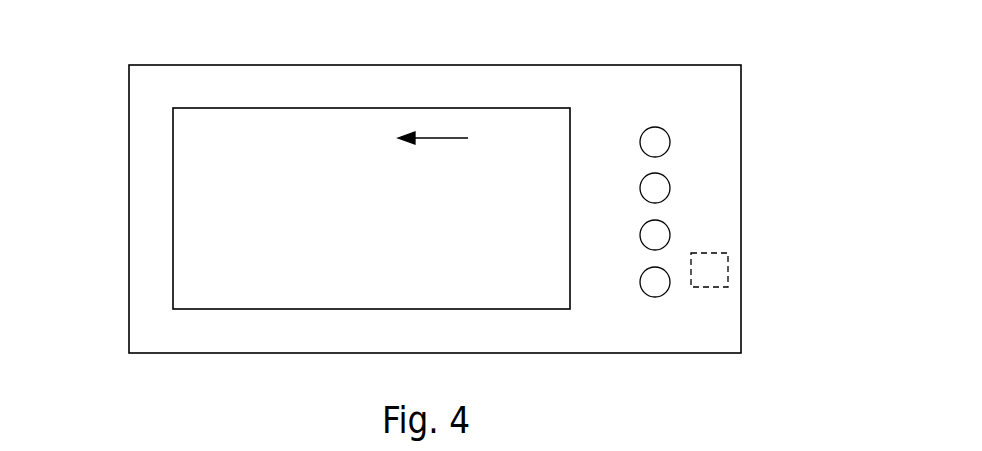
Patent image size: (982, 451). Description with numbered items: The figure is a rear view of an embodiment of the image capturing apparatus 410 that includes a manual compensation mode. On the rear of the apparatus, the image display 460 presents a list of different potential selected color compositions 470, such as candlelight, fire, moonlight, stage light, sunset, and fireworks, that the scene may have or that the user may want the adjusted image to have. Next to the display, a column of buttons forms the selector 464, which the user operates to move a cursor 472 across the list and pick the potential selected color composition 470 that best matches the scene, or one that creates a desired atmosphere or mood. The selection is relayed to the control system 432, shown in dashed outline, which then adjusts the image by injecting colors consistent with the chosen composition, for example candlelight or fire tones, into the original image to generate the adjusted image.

The image capturing apparatus 410 is at (114, 137).
The image display 460 is at (172, 291).
The potential selected color compositions 470 is at (195, 163).
The cursor 472 is at (438, 138).
The selector 464 is at (665, 186).
The control system 432 is at (728, 253).